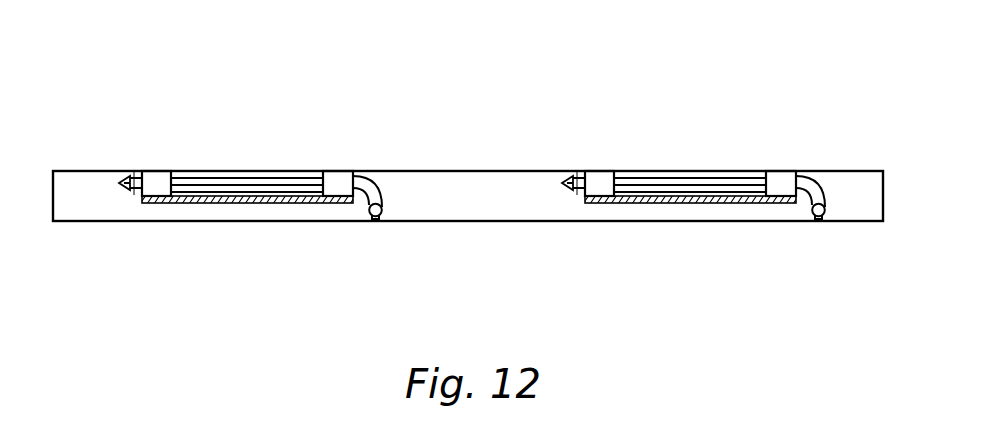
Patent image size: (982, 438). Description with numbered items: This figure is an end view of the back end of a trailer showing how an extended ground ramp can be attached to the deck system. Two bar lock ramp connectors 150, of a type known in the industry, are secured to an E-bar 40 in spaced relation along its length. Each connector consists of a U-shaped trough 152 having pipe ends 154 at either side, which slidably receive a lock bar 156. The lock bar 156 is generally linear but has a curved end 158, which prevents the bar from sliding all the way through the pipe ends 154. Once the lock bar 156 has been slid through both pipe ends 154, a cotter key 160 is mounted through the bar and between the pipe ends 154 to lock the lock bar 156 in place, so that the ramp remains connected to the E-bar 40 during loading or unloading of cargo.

The E-bar 40 is at (83, 205).
The bar lock ramp connector 150 is at (621, 120).
The U-shaped trough 152 is at (263, 203).
The pipe ends 154 is at (158, 188).
The lock bar 156 is at (238, 183).
The curved end 158 is at (390, 176).
The cotter key 160 is at (137, 172).